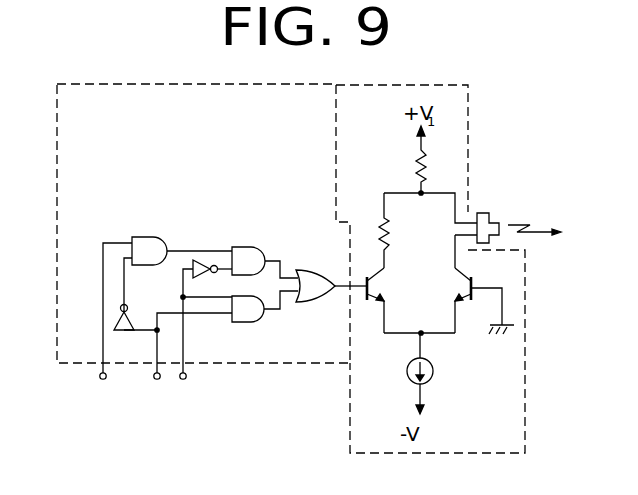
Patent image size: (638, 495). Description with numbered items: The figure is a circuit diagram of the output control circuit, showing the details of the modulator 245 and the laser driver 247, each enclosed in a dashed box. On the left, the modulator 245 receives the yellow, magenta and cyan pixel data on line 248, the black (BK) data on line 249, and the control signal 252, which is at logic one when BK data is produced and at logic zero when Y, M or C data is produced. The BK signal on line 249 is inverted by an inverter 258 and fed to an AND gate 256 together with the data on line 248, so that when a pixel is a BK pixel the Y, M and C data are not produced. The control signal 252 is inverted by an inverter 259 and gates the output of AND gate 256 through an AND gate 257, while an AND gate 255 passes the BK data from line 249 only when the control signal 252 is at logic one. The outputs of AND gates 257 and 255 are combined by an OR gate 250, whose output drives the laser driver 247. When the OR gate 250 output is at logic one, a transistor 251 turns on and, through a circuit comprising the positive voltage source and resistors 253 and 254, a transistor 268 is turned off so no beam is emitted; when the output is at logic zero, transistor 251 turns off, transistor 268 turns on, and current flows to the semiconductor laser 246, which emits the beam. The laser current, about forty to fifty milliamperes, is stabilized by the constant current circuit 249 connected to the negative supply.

The modulator 245 is at (160, 75).
The semiconductor laser 246 is at (486, 213).
The laser driver 247 is at (468, 75).
The line 248 is at (100, 358).
The line / constant current circuit 249 is at (150, 353).
The OR gate 250 is at (312, 270).
The transistor 251 is at (373, 289).
The control signal 252 is at (184, 352).
The resistor 253 is at (380, 233).
The resistor 254 is at (424, 160).
The AND gate 255 is at (246, 322).
The AND gate 256 is at (148, 237).
The AND gate 257 is at (247, 247).
The inverter 258 is at (129, 318).
The inverter 259 is at (202, 259).
The transistor 268 is at (472, 285).